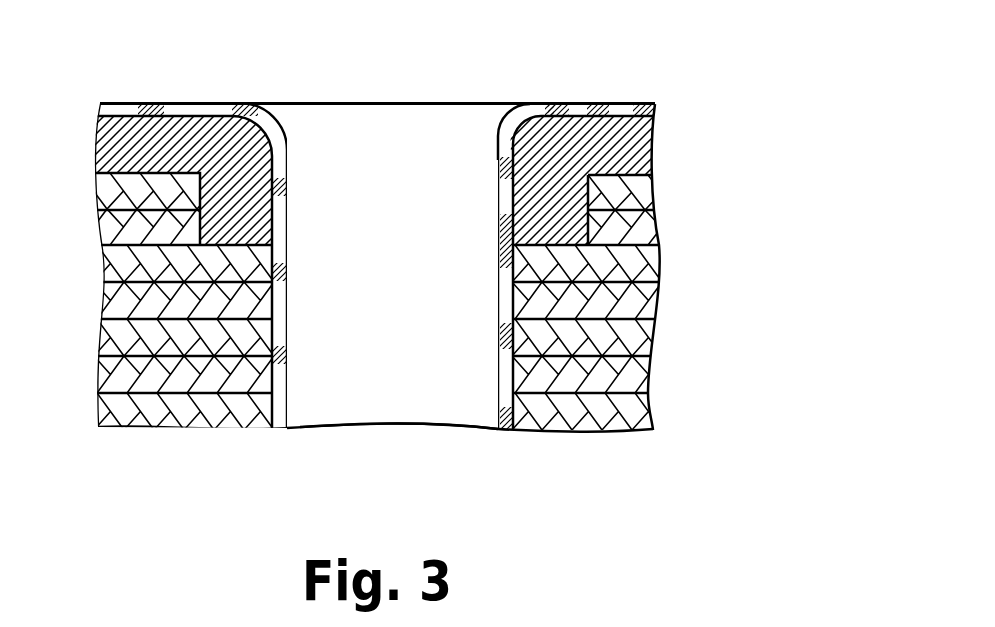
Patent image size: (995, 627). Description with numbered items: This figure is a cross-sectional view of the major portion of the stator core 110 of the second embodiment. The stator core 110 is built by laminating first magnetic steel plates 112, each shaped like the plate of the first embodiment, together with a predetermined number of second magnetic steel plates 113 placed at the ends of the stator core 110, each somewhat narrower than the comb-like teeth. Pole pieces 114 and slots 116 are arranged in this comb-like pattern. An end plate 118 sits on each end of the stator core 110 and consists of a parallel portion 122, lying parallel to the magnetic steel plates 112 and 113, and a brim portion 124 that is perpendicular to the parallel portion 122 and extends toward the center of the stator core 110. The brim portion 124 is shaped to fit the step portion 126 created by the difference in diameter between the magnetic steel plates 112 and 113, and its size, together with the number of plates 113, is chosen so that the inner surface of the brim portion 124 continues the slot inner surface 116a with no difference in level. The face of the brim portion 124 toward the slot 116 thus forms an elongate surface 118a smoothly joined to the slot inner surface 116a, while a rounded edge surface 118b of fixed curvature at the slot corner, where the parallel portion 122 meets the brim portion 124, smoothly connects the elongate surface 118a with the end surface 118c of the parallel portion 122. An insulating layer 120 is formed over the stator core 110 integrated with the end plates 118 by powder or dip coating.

The stator core 110 is at (773, 182).
The first magnetic steel plate 112 is at (658, 268).
The second magnetic steel plate 113 is at (658, 192).
The pole piece 114 is at (505, 308).
The slot 116 is at (398, 247).
The slot inner surface 116a is at (500, 353).
The end plate 118 is at (660, 135).
The elongate surface 118a is at (513, 214).
The rounded edge surface 118b is at (516, 123).
The end surface 118c is at (609, 120).
The insulating layer 120 is at (650, 104).
The parallel portion 122 is at (555, 98).
The brim portion 124 is at (505, 229).
The step portion 126 is at (577, 243).